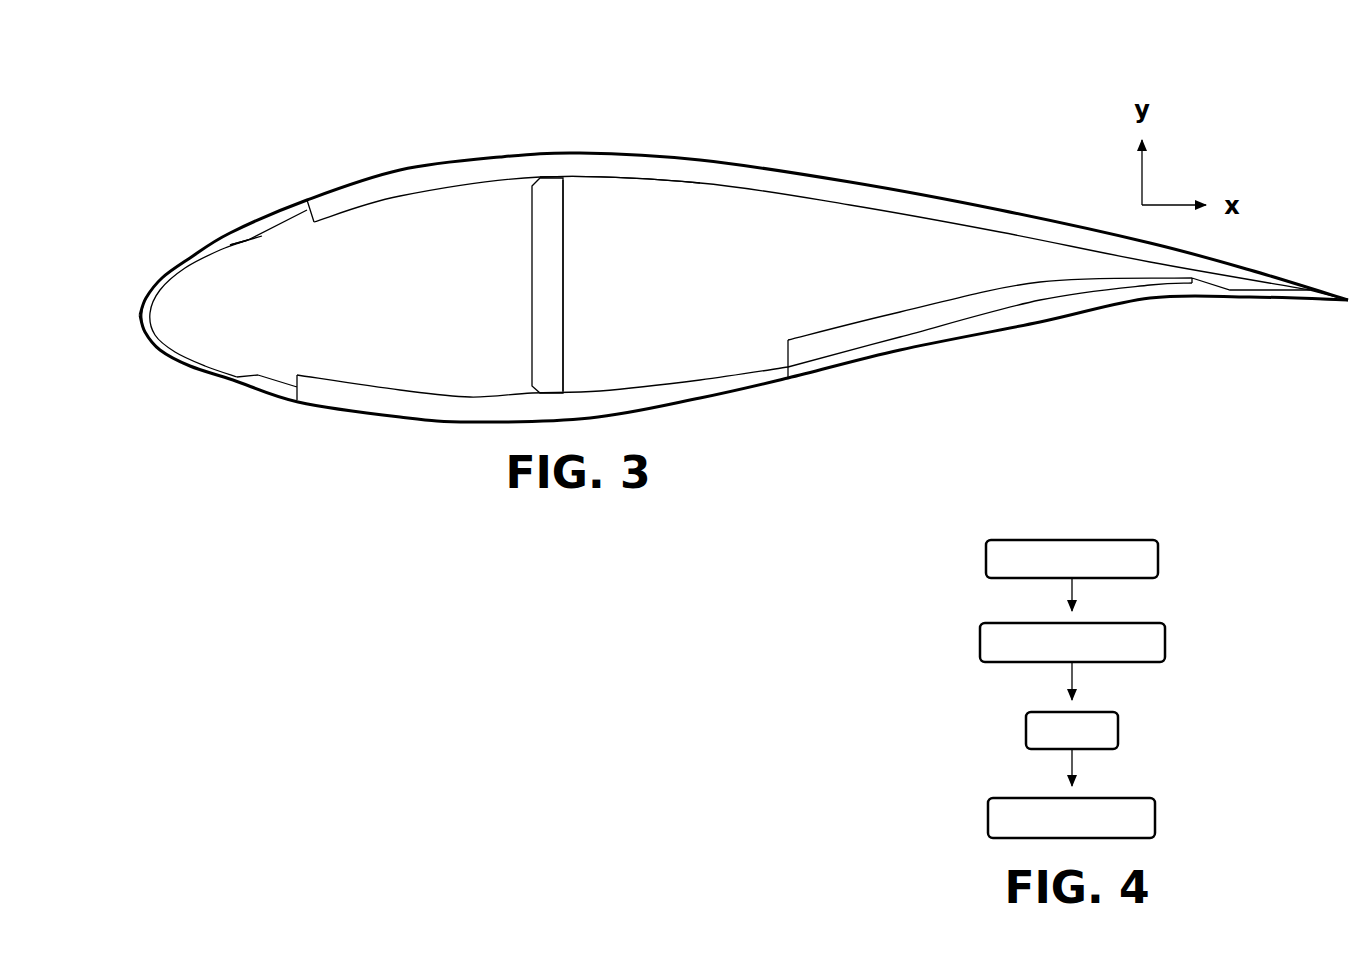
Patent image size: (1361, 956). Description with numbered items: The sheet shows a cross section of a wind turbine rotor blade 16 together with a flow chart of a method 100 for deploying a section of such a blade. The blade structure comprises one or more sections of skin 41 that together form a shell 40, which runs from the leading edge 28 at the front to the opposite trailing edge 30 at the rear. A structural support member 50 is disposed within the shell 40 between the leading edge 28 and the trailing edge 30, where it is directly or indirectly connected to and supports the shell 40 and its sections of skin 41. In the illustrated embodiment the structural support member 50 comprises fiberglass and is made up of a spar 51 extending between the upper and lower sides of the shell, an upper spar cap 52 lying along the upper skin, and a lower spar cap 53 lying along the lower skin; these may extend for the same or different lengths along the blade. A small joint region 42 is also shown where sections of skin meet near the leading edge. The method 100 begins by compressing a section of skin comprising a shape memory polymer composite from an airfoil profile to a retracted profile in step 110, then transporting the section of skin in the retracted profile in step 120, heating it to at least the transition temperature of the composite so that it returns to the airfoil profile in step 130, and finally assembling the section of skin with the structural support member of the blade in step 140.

In FIG. 3, the wind turbine rotor blade 16 is at (246, 130).
In FIG. 3, the leading edge 28 is at (138, 322).
In FIG. 3, the trailing edge 30 is at (1348, 303).
In FIG. 3, the shell 40 is at (341, 181).
In FIG. 3, the skin 41 is at (190, 255).
In FIG. 3, the joint between leading edge cap and skin 42 is at (263, 236).
In FIG. 3, the structural support member 50 is at (529, 250).
In FIG. 3, the spar 51 is at (565, 290).
In FIG. 3, the upper spar cap 52 is at (585, 177).
In FIG. 3, the lower spar cap 53 is at (645, 381).
In FIG. 4, the method 100 is at (951, 534).
In FIG. 4, the compressing step 110 is at (1160, 558).
In FIG. 4, the transporting step 120 is at (1167, 643).
In FIG. 4, the heating step 130 is at (1120, 728).
In FIG. 4, the assembling step 140 is at (1158, 816).